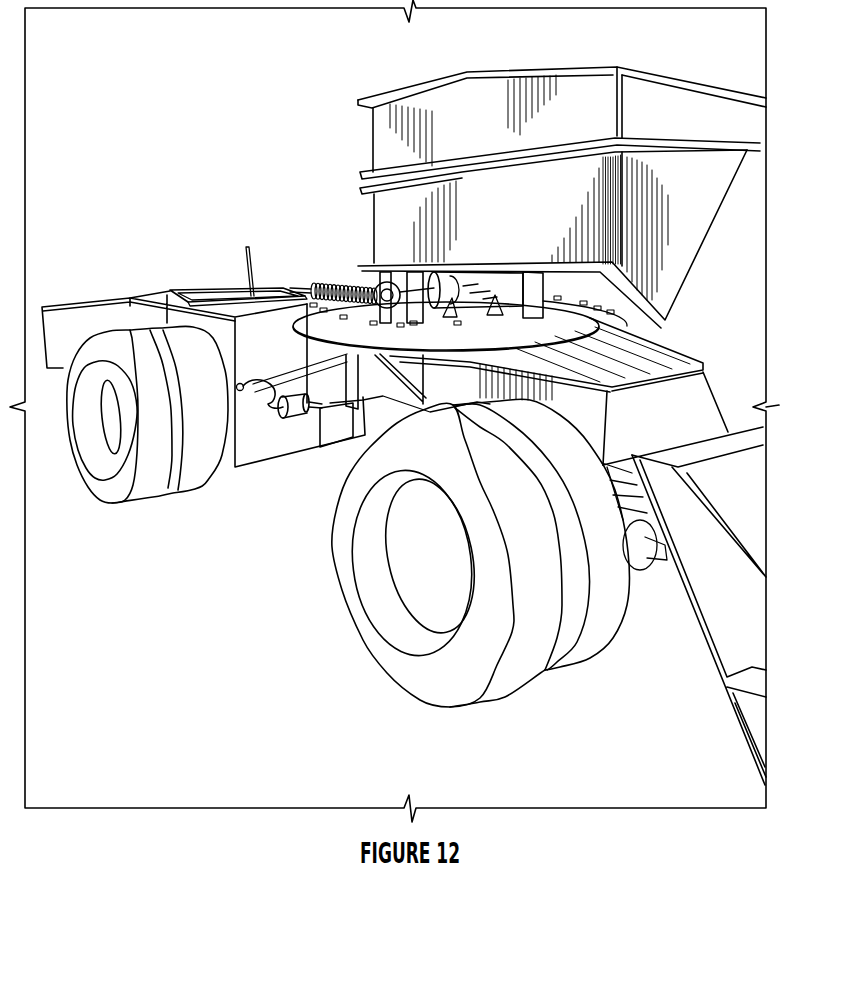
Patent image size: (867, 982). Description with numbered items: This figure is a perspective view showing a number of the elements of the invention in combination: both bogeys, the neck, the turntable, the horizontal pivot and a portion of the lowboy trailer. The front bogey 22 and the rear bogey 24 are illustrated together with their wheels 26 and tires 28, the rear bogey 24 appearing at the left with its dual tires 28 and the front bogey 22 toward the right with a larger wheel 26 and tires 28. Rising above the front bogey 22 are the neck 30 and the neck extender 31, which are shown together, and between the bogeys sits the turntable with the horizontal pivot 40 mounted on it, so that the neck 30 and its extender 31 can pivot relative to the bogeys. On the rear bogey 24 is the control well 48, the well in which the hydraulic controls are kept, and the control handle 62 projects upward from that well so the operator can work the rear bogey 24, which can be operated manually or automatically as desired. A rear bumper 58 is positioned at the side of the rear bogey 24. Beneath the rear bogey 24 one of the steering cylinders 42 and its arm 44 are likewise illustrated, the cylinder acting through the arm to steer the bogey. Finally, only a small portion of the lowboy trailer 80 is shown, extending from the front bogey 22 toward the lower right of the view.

The front bogey 22 is at (650, 422).
The rear bogey 24 is at (280, 359).
The wheels 26 is at (440, 561).
The tires 28 is at (163, 437).
The neck 30 is at (533, 209).
The neck extender 31 is at (458, 126).
The horizontal pivot 40 is at (374, 279).
The steering cylinder 42 is at (279, 416).
The arm 44 is at (312, 414).
The control well 48 is at (222, 290).
The rear bumper 58 is at (75, 337).
The control handle 62 is at (249, 259).
The lowboy trailer 80 is at (714, 680).